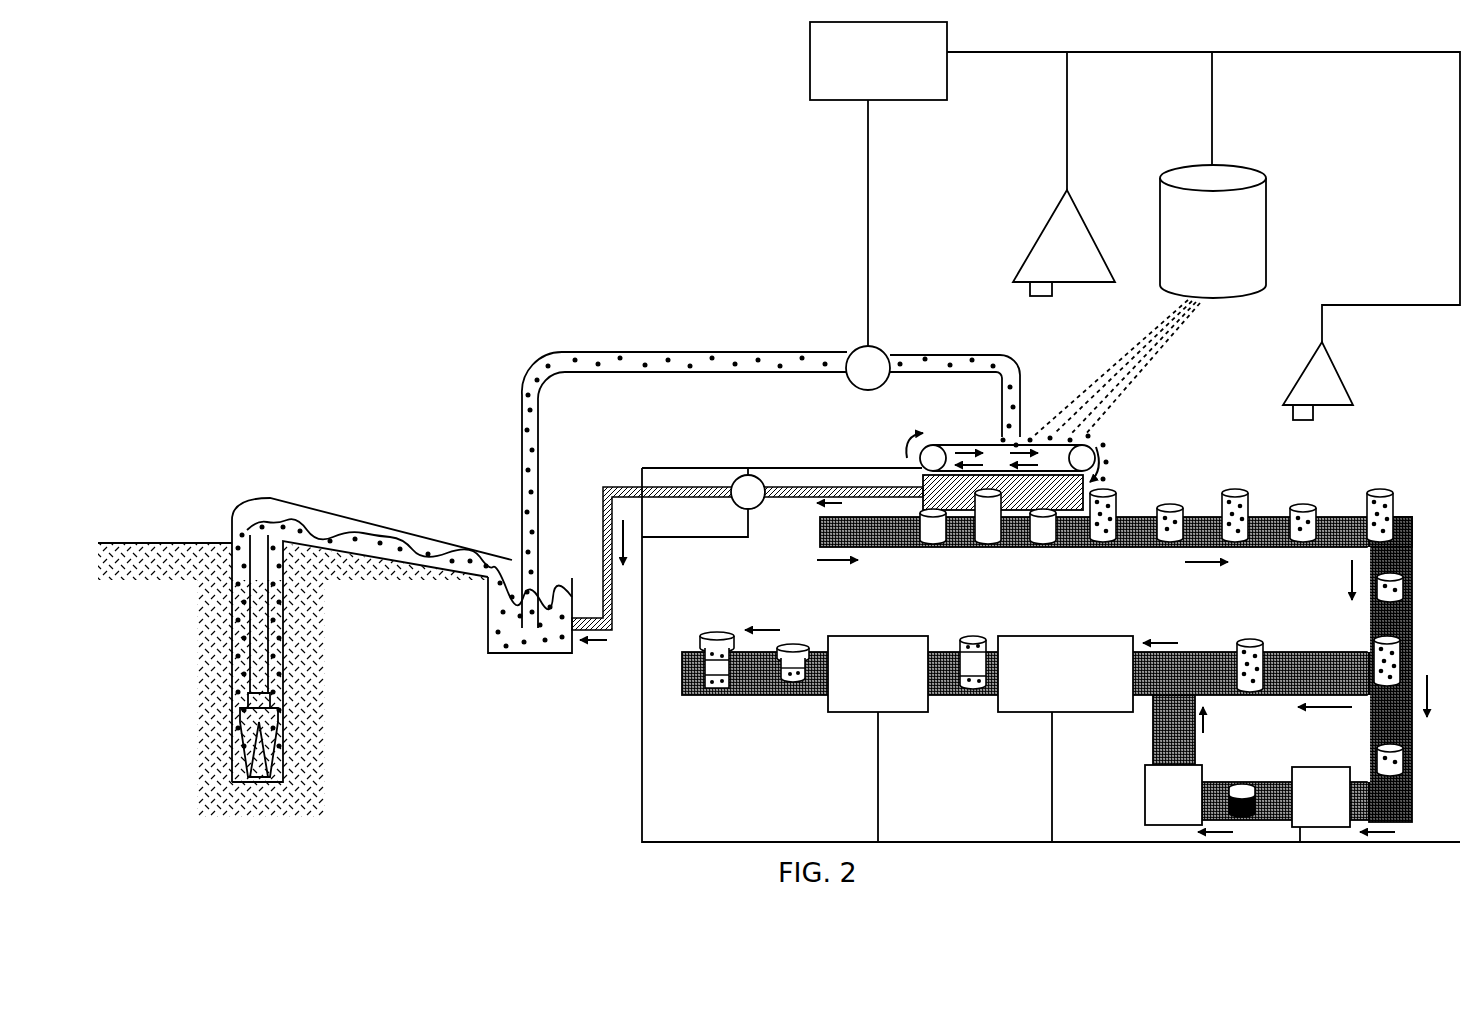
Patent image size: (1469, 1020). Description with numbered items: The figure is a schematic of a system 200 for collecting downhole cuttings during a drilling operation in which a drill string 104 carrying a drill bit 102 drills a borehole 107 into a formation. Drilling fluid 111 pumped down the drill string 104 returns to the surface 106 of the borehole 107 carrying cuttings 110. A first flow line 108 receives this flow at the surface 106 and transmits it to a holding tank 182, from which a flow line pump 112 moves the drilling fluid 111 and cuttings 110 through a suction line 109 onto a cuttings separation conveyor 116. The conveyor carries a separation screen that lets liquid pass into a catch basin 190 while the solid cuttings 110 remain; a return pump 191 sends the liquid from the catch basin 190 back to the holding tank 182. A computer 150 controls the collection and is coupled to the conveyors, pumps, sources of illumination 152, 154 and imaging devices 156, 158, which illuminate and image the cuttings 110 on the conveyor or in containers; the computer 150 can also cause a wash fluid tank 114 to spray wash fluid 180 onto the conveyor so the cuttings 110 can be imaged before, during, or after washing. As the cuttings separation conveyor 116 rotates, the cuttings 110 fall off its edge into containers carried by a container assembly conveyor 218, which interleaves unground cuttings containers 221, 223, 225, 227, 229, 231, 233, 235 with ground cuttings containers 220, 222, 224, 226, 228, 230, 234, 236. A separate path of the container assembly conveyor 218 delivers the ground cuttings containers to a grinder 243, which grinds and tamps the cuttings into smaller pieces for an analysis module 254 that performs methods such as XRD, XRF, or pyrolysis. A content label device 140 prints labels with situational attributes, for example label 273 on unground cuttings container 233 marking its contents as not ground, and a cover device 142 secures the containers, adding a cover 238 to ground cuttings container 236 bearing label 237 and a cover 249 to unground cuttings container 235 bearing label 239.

The drill bit 102 is at (267, 730).
The drill string 104 is at (240, 658).
The surface 106 is at (180, 543).
The borehole 107 is at (228, 622).
The first flow line 108 is at (347, 510).
The suction line 109 is at (590, 352).
The cuttings 110 is at (417, 550).
The drilling fluid 111 is at (248, 533).
The flow line pump 112 is at (850, 343).
The wash fluid tank 114 is at (1213, 231).
The cuttings separation conveyor 116 is at (960, 443).
The content label device 140 is at (1065, 739).
The cover device 142 is at (878, 739).
The computer 150 is at (1051, 432).
The source of illumination 152 is at (1041, 233).
The source of illumination 154 is at (1293, 387).
The imaging device 156 is at (1030, 293).
The imaging device 158 is at (1293, 413).
The wash fluid 180 is at (1125, 370).
The holding tank 182 is at (553, 653).
The catch basin 190 is at (923, 487).
The return pump 191 is at (747, 478).
The system 200 is at (446, 238).
The container assembly conveyor 218 is at (902, 547).
The ground cuttings container 220 is at (933, 547).
The unground cuttings container 221 is at (983, 527).
The ground cuttings container 222 is at (1047, 540).
The unground cuttings container 223 is at (1110, 538).
The ground cuttings container 224 is at (1170, 534).
The unground cuttings container 225 is at (1237, 534).
The ground cuttings container 226 is at (1303, 543).
The unground cuttings container 227 is at (1380, 490).
The ground cuttings container 228 is at (1412, 538).
The unground cuttings container 229 is at (1372, 657).
The ground cuttings container 230 is at (1377, 758).
The unground cuttings container 231 is at (1263, 667).
The unground cuttings container 233 is at (975, 690).
The ground cuttings container 234 is at (1240, 788).
The unground cuttings container 235 is at (712, 685).
The ground cuttings container 236 is at (797, 680).
The label 237 is at (793, 677).
The cover 238 is at (805, 650).
The label 239 is at (716, 675).
The grinder 243 is at (1321, 804).
The cover 249 is at (727, 636).
The analysis module 254 is at (1173, 795).
The label 273 is at (965, 690).